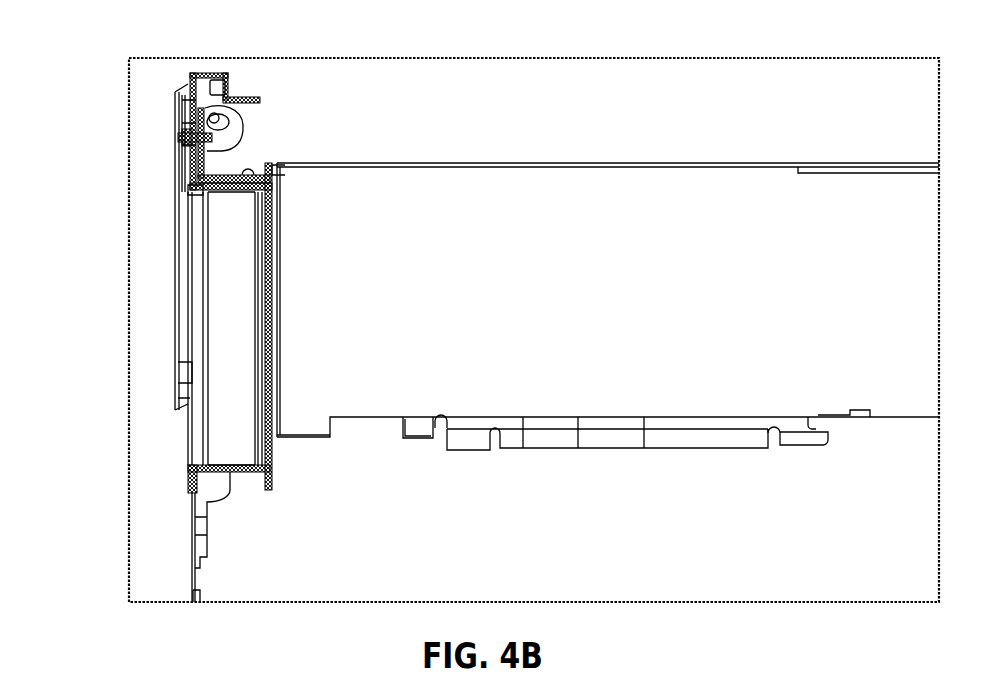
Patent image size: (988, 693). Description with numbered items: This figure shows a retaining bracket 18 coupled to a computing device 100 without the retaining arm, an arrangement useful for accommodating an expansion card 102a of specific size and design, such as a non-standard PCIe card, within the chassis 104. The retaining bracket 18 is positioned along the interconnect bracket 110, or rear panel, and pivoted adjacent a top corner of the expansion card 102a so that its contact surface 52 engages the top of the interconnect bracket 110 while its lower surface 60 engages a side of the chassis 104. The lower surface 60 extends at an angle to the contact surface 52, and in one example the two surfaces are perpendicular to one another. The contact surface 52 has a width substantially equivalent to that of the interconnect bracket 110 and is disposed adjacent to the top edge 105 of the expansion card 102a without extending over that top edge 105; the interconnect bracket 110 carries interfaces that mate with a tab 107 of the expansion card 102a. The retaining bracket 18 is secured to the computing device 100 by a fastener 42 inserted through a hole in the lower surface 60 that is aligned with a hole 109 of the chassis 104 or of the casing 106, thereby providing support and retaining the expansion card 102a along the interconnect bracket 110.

The computing device 100 is at (114, 64).
The expansion card 102a is at (605, 278).
The top edge 105 is at (483, 165).
The retaining bracket 18 is at (288, 121).
The contact surface 52 is at (218, 171).
The lower surface 60 is at (267, 168).
The fastener 42 is at (180, 136).
The hole 109 is at (181, 147).
The tab 107 is at (237, 183).
The chassis 104 is at (188, 277).
The interconnect bracket 110 is at (217, 332).
The casing 106 is at (175, 370).